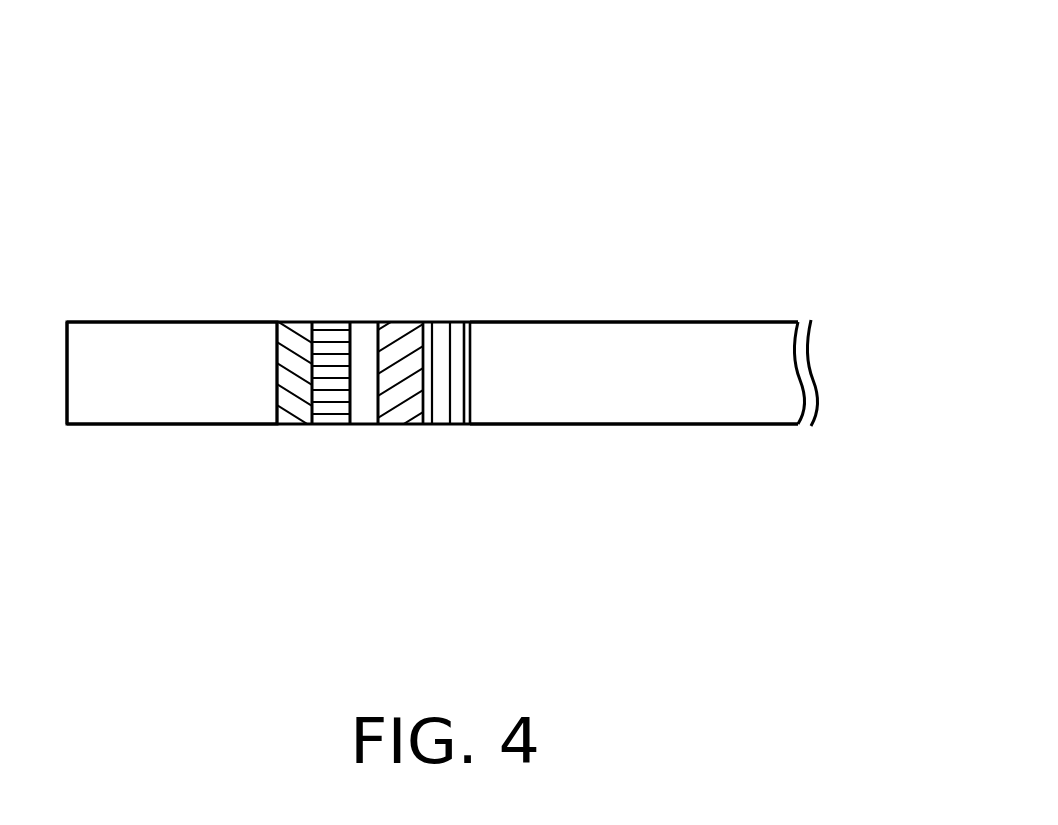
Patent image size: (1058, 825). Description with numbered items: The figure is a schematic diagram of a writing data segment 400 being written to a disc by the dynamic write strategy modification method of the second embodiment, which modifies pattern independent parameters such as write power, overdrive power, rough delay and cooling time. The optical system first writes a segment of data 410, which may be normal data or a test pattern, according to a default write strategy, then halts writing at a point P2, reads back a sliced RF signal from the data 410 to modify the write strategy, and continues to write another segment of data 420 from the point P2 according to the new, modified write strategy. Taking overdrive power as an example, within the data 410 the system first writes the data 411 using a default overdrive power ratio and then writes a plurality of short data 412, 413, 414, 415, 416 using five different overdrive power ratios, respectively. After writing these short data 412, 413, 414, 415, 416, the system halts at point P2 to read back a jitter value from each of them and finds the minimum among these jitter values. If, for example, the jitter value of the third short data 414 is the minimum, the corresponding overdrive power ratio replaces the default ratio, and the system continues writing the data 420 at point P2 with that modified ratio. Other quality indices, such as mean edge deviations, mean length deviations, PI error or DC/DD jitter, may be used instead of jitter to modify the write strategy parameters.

The writing data segment 400 is at (752, 122).
The segment of data 410 is at (470, 316).
The data 411 is at (173, 426).
The short data 412 is at (297, 426).
The short data 413 is at (332, 426).
The short data 414 is at (365, 426).
The short data 415 is at (402, 426).
The short data 416 is at (442, 426).
The point P2 is at (469, 397).
The segment of data 420 is at (620, 323).